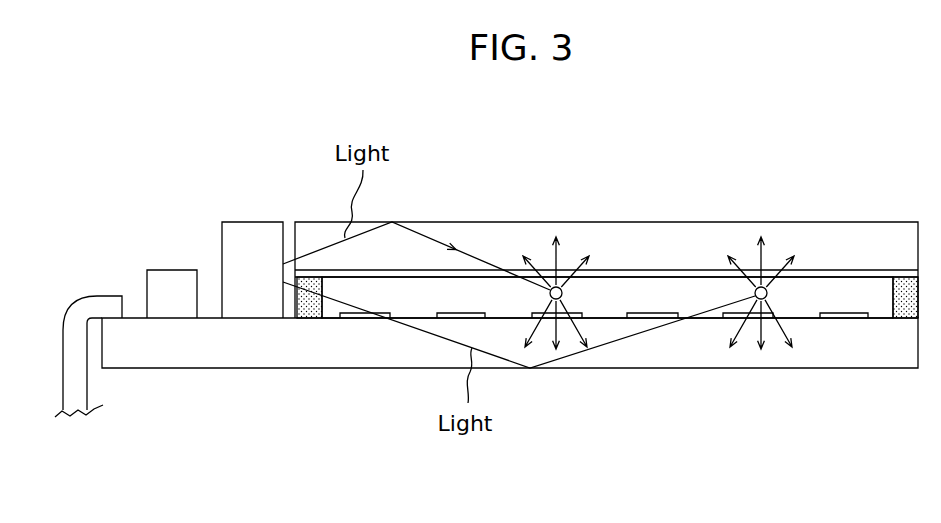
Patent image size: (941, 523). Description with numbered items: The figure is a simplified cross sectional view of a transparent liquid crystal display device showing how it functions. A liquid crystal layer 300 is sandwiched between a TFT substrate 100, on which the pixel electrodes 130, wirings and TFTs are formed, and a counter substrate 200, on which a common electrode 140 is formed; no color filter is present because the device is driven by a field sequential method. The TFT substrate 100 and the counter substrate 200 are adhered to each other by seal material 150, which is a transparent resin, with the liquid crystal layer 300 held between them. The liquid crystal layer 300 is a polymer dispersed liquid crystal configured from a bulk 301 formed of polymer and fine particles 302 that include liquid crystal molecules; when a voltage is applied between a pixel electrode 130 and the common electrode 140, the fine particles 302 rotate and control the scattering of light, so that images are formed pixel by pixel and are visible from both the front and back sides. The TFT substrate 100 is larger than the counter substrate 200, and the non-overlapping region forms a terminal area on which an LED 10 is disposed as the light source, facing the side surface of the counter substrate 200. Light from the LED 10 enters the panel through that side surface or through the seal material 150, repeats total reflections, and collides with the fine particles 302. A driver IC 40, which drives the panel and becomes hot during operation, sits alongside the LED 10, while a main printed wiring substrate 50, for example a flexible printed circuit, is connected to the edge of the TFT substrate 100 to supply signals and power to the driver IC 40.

The LED 10 is at (250, 228).
The driver IC 40 is at (175, 268).
The main printed wiring substrate 50 is at (100, 296).
The TFT substrate 100 is at (388, 355).
The pixel electrode 130 is at (845, 320).
The common electrode 140 is at (702, 268).
The seal material 150 is at (308, 318).
The counter substrate 200 is at (622, 225).
The liquid crystal layer 300 is at (590, 162).
The bulk 301 is at (492, 292).
The fine particles 302 is at (564, 287).